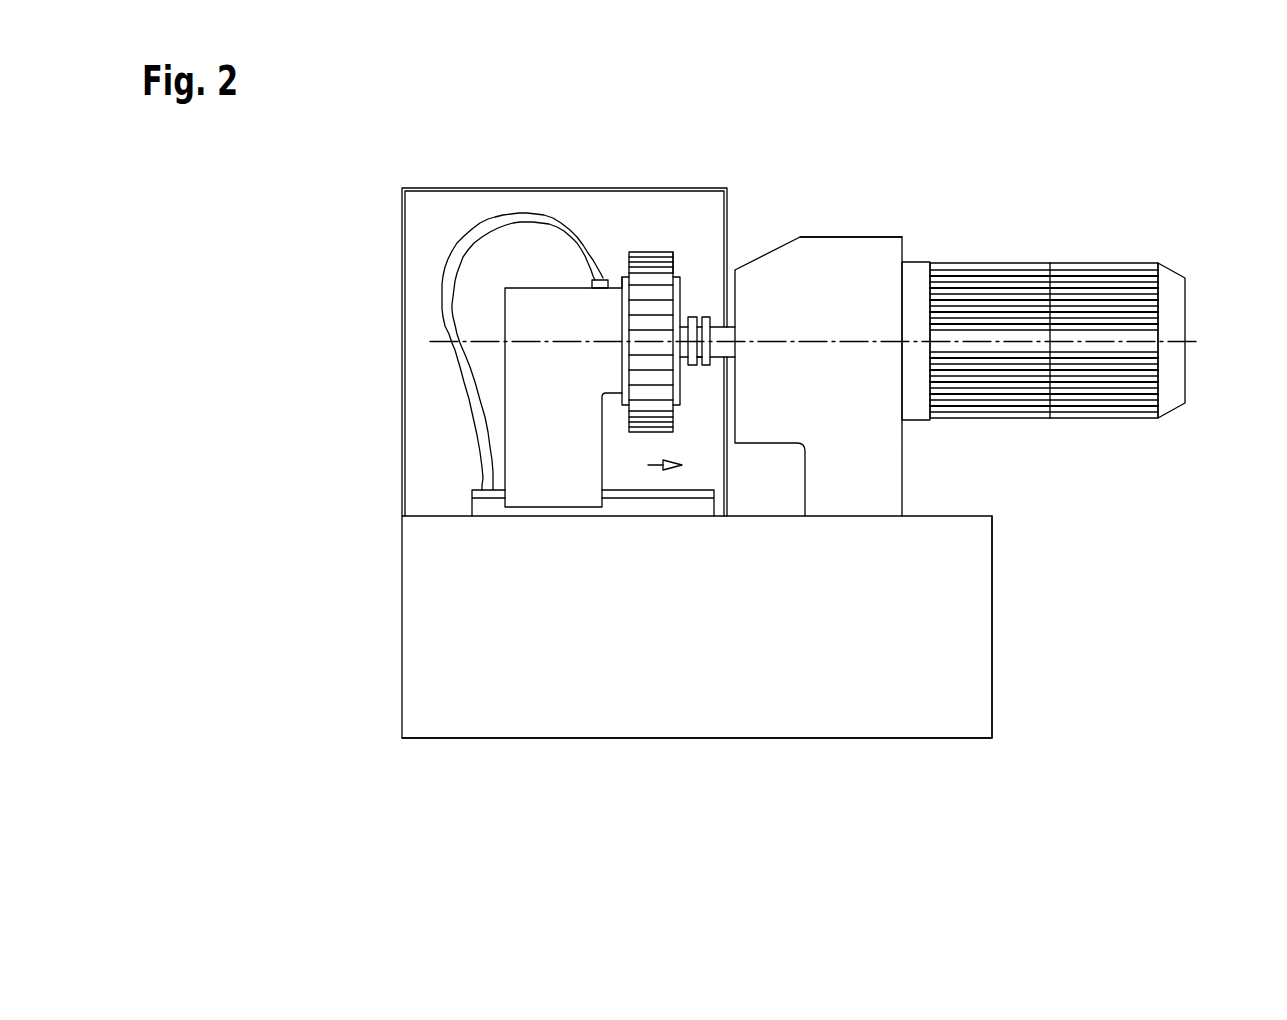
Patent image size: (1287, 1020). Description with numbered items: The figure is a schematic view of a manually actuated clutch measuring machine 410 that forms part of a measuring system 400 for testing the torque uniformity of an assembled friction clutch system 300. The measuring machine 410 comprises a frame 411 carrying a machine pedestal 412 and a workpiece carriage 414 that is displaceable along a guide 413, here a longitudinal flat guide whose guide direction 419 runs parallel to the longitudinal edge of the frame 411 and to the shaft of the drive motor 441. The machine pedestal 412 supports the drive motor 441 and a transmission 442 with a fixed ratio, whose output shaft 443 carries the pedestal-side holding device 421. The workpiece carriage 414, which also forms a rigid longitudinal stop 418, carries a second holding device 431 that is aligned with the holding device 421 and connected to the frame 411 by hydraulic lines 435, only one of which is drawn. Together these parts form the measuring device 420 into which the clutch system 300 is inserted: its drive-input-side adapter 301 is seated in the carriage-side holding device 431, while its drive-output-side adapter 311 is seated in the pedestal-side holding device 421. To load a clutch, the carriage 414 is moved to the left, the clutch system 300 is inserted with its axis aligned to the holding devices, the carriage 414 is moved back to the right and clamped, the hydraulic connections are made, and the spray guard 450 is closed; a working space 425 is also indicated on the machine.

The friction clutch system 300 is at (652, 315).
The drive-input-side adapter 301 is at (622, 243).
The drive-output-side adapter 311 is at (700, 372).
The measuring system 400 is at (861, 228).
The measuring machine 410 is at (964, 756).
The frame 411 is at (898, 633).
The machine pedestal 412 is at (840, 422).
The guide 413 is at (490, 507).
The workpiece carriage 414 is at (553, 442).
The longitudinal stop 418 is at (611, 232).
The guide direction 419 is at (648, 465).
The measuring device 420 is at (698, 272).
The holding device 421 is at (730, 309).
The working space 425 is at (686, 248).
The holding device 431 is at (608, 270).
The hydraulic lines 435 is at (465, 357).
The drive motor 441 is at (1051, 275).
The transmission 442 is at (850, 275).
The output shaft 443 is at (723, 347).
The spray guard 450 is at (403, 420).